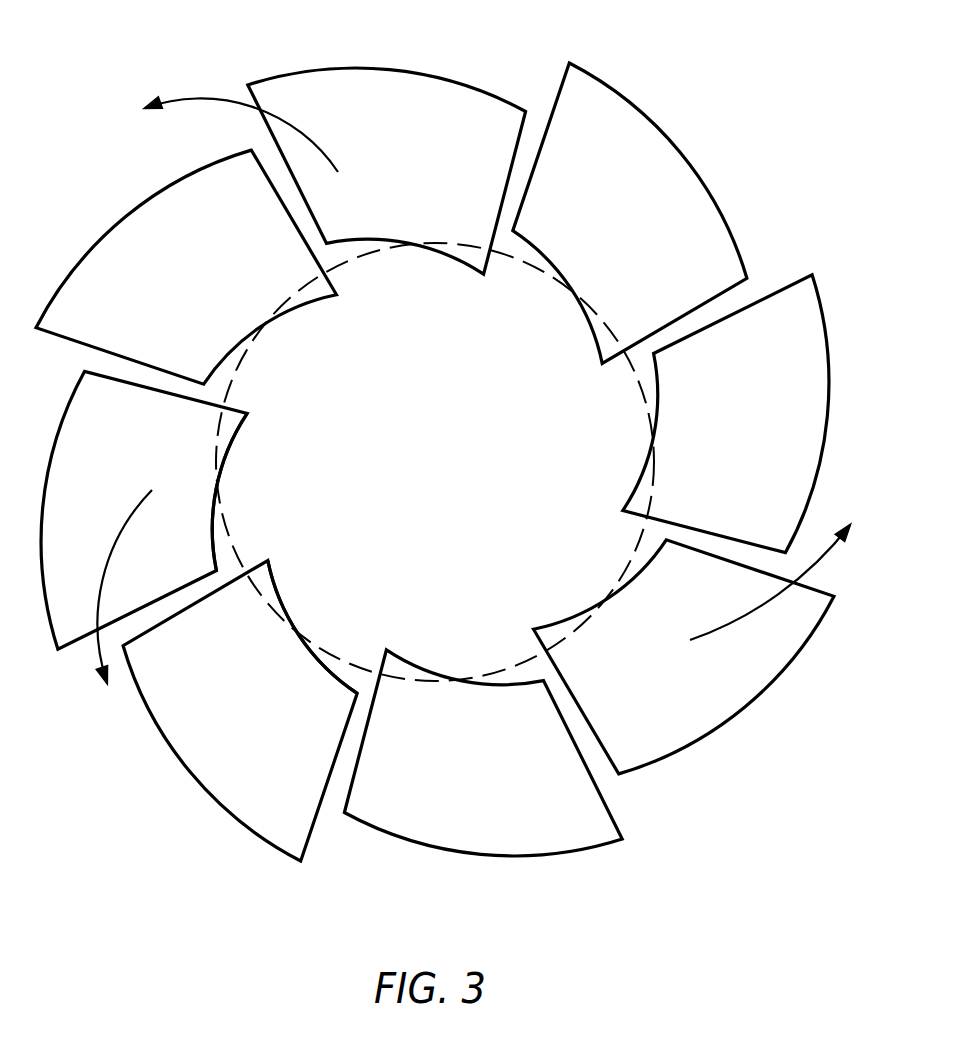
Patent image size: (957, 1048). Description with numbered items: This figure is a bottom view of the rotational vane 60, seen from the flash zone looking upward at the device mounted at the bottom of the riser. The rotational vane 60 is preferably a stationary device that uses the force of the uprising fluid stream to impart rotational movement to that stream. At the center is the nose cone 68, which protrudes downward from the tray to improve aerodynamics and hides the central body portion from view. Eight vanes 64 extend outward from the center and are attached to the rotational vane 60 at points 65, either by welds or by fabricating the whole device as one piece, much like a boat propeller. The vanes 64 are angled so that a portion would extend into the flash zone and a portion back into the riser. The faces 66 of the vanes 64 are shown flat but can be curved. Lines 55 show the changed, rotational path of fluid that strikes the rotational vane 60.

The rotational vane 60 is at (165, 888).
The vanes 64 is at (432, 72).
The face 66 is at (222, 235).
The nose cone 68 is at (420, 471).
The points 65 is at (293, 622).
The lines 55 is at (312, 138).